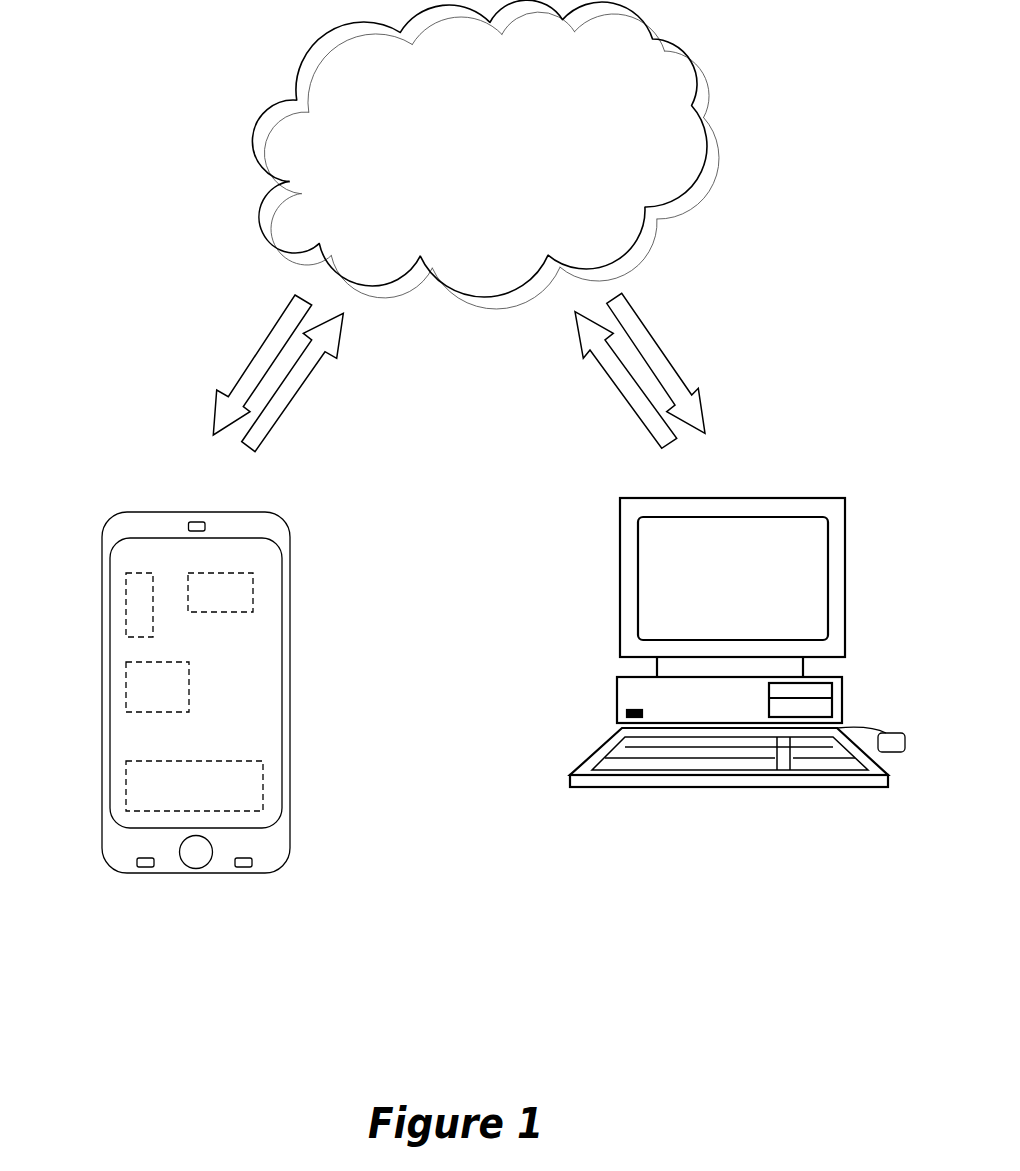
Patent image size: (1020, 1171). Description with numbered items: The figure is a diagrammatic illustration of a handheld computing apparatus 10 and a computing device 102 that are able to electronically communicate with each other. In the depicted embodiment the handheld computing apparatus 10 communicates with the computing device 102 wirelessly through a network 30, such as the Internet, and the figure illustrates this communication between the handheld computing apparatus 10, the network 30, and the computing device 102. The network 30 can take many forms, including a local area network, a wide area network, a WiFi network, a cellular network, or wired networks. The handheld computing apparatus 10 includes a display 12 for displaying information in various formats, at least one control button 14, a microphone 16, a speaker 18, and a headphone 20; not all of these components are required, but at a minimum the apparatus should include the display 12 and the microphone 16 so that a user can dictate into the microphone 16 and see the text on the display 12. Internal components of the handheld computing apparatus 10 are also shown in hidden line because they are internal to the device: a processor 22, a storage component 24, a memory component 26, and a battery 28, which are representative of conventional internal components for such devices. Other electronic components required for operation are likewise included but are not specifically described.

The handheld computing apparatus 10 is at (280, 508).
The display 12 is at (247, 653).
The control button 14 is at (192, 852).
The microphone 16 is at (240, 868).
The speaker 18 is at (145, 868).
The headphone 20 is at (196, 520).
The processor 22 is at (140, 592).
The storage component 24 is at (240, 595).
The memory component 26 is at (130, 683).
The battery 28 is at (130, 794).
The network 30 is at (490, 164).
The computing device 102 is at (585, 615).